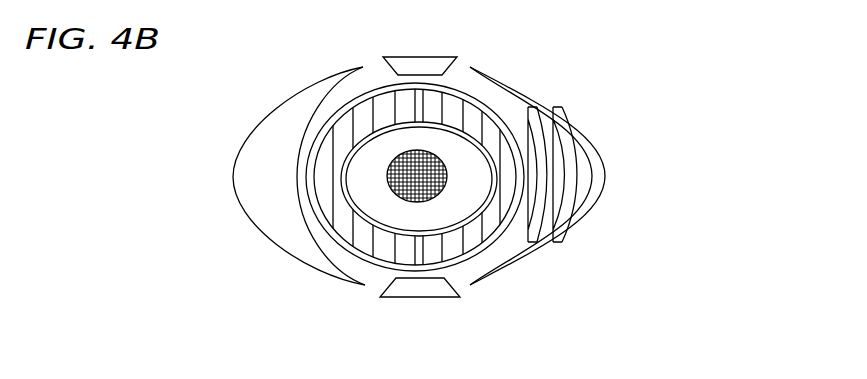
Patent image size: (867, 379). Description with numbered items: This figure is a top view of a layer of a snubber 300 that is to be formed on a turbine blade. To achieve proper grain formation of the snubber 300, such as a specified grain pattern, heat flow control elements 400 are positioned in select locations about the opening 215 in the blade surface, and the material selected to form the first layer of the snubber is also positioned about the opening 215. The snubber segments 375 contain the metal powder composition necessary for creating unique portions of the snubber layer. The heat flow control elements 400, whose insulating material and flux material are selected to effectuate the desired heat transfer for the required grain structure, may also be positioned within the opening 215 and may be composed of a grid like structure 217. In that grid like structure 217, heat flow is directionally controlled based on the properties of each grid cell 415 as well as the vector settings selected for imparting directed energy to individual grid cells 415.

The opening 215 is at (512, 268).
The grid like structure 217 is at (390, 190).
The snubber 300 is at (325, 115).
The snubber segments 375 is at (387, 105).
The heat flow control elements 400 is at (419, 55).
The grid cell 415 is at (412, 162).